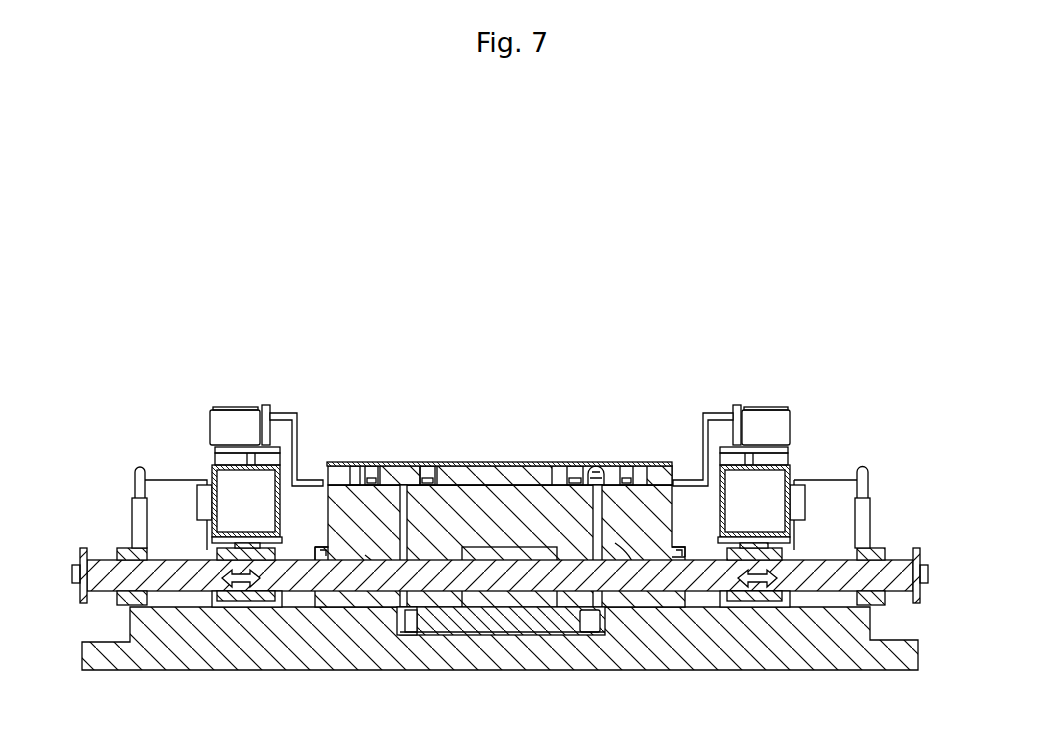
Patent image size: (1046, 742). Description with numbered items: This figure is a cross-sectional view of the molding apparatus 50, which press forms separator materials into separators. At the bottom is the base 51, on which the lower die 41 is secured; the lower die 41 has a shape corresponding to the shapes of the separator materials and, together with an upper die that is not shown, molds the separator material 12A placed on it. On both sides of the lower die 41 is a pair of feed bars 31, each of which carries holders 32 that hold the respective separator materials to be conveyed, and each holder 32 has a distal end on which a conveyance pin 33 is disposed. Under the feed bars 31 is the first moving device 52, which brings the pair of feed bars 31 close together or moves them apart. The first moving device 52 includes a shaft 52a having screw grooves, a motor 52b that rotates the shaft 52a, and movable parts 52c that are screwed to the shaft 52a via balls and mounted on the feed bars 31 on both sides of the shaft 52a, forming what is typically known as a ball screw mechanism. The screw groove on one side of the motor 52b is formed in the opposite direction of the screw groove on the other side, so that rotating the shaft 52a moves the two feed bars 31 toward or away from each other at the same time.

The molding apparatus 50 is at (862, 330).
The base 51 is at (788, 653).
The lower die 41 is at (614, 545).
The shaft 52a is at (680, 580).
The motor 52b is at (508, 600).
The movable parts 52c is at (225, 597).
The first moving device 52 is at (84, 552).
The feed bar 31 is at (225, 485).
The holder 32 is at (243, 427).
The conveyance pin 33 is at (315, 473).
The separator material 12A is at (473, 462).